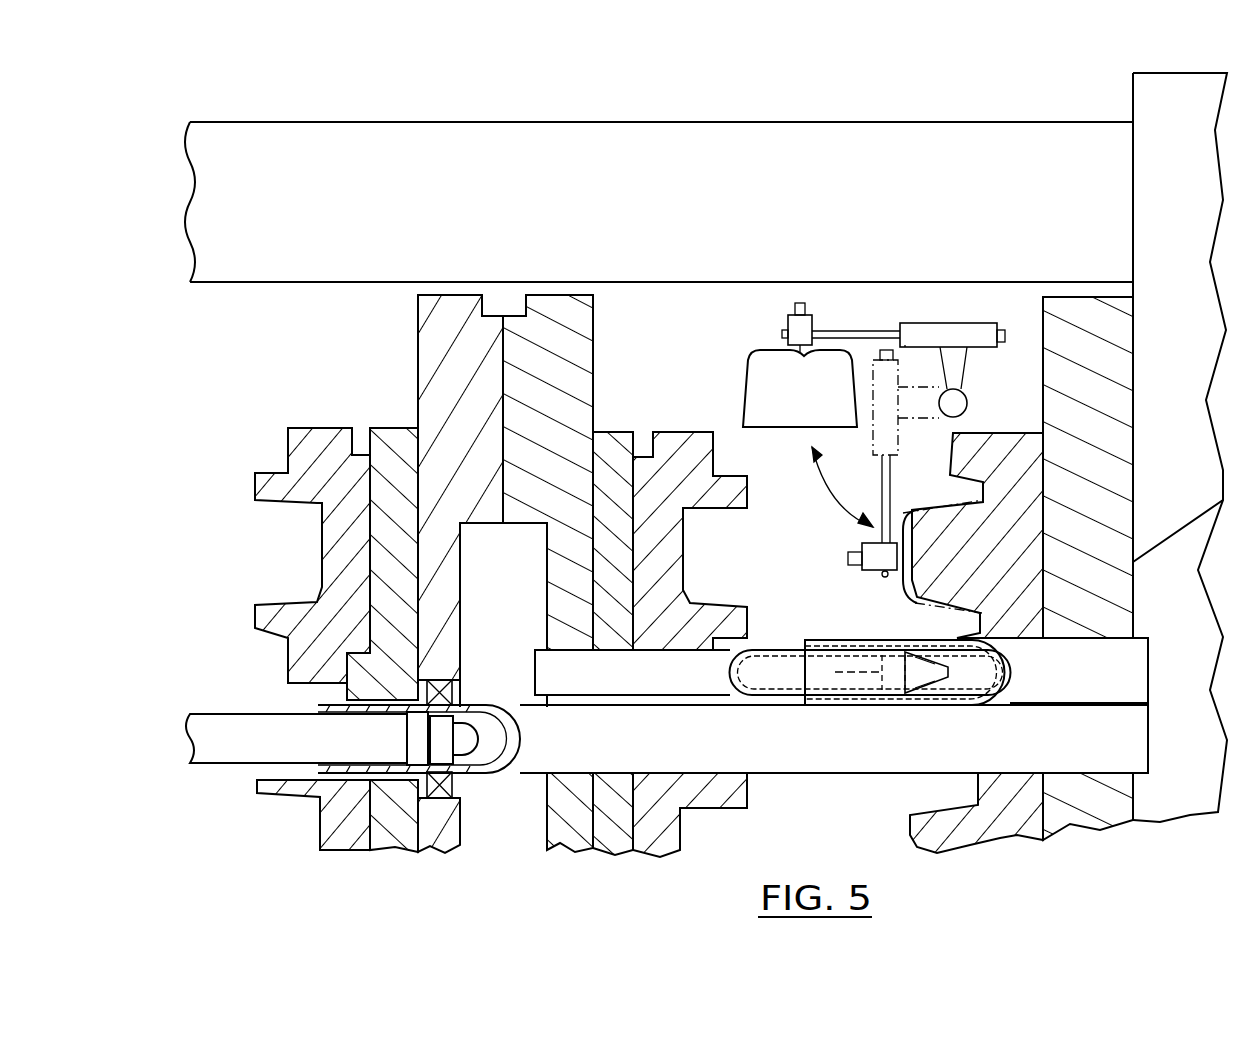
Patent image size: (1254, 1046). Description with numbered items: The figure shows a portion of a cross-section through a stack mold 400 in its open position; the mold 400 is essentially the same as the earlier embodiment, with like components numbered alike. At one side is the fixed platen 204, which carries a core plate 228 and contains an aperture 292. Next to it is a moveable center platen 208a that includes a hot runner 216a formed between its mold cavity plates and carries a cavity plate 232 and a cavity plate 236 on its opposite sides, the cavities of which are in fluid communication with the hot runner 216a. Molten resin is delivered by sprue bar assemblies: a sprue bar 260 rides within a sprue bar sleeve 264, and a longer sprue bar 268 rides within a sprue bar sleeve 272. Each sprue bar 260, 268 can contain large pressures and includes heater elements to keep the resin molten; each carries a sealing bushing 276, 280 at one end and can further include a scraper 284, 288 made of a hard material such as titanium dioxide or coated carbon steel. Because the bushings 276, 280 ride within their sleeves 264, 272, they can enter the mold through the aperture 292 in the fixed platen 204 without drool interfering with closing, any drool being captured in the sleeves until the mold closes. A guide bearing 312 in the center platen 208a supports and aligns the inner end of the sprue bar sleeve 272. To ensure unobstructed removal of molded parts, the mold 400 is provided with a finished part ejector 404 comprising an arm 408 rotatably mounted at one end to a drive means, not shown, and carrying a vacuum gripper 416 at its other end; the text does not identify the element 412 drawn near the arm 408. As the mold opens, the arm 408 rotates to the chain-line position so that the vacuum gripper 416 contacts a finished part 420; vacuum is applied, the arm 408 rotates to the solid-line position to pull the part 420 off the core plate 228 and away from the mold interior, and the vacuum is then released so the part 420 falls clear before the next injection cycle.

The mold 400 is at (795, 90).
The fixed platen 204 is at (1170, 100).
The center platen 208a is at (553, 308).
The hot runner 216a is at (531, 589).
The core plate 228 is at (950, 452).
The cavity plate 232 is at (663, 455).
The cavity plate 236 is at (322, 438).
The sprue bar 260 is at (642, 689).
The sprue bar sleeve 264 is at (1102, 689).
The sprue bar 268 is at (262, 756).
The sprue bar sleeve 272 is at (1104, 757).
The sealing bushing 276 is at (942, 655).
The sealing bushing 280 is at (462, 733).
The scraper 284 is at (870, 672).
The scraper 288 is at (407, 740).
The aperture 292 is at (1140, 625).
The guide bearing 312 is at (452, 690).
The finished part ejector 404 is at (956, 308).
The arm 408 is at (910, 323).
The ball joint 412 is at (960, 402).
The vacuum gripper 416 is at (781, 342).
The finished part 420 is at (745, 356).